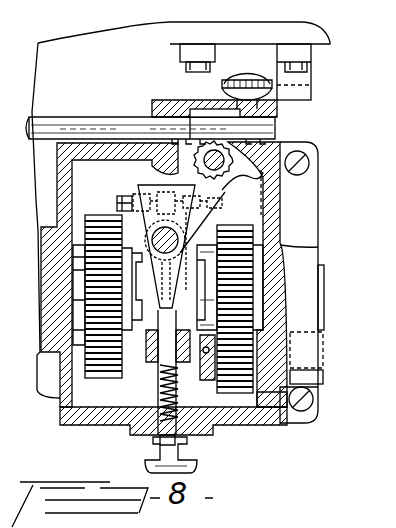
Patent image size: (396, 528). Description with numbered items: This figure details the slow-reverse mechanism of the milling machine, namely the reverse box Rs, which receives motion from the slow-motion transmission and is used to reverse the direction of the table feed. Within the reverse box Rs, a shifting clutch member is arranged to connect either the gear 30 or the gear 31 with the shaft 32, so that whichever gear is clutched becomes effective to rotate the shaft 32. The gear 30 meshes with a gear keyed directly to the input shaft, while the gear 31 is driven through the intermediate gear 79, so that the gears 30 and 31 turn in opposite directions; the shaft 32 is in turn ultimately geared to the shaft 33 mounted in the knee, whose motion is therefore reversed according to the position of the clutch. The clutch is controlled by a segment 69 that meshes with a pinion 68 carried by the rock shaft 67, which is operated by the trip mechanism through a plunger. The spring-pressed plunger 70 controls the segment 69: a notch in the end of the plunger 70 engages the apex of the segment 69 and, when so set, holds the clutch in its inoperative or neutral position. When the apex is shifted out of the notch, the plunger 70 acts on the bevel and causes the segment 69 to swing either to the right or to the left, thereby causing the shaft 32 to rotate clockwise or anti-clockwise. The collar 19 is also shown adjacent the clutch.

The rock shaft 67 is at (212, 152).
The segment 69 is at (160, 178).
The pinion 68 is at (227, 192).
The gear 31 is at (256, 233).
The shaft 33 is at (166, 246).
The collar 19 is at (199, 287).
The intermediate gear 79 is at (256, 357).
The shaft 32 is at (323, 313).
The gear 30 is at (143, 351).
The spring-pressed plunger 70 is at (152, 346).
The reverse box Rs is at (266, 418).